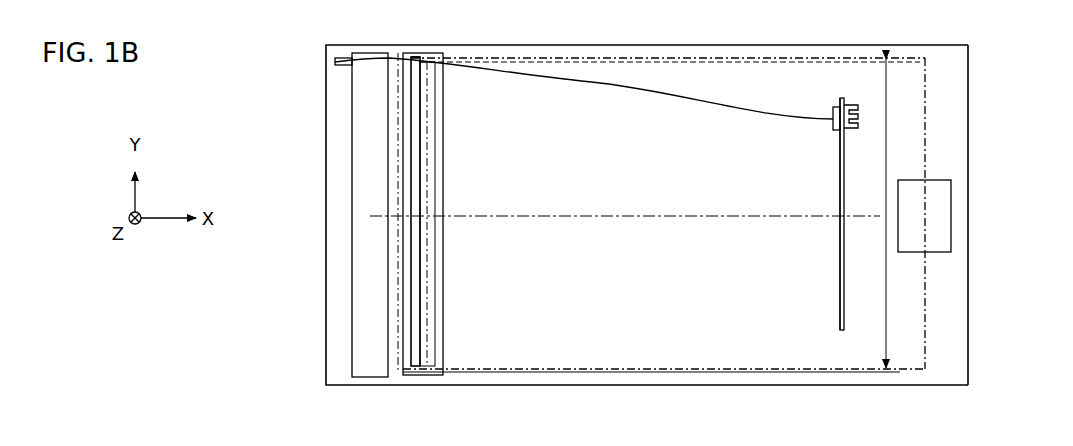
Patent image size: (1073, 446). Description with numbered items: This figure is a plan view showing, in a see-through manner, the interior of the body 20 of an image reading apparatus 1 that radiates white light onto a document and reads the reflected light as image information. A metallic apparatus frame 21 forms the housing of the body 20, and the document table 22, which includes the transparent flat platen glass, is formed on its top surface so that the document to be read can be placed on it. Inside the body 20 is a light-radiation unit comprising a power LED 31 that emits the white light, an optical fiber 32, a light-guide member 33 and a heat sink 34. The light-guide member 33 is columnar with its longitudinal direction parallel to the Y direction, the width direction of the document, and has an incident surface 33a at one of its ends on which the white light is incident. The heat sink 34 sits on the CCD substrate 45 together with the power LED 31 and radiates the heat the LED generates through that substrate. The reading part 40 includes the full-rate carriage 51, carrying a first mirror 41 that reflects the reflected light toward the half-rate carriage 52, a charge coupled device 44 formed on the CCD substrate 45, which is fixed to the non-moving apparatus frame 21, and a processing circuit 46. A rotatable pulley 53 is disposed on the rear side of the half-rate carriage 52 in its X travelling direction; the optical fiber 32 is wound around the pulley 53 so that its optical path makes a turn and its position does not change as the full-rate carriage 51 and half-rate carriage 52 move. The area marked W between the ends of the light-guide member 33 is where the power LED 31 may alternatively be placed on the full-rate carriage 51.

The image reading apparatus 1 is at (990, 87).
The body 20 is at (325, 348).
The apparatus frame 21 is at (968, 152).
The document table 22 is at (925, 328).
The power LED 31 is at (835, 105).
The optical fiber 32 is at (602, 83).
The light-guide member 33 is at (417, 165).
The incident surface 33a is at (416, 56).
The heat sink 34 is at (850, 103).
The reading part 40 is at (448, 332).
The first mirror 41 is at (425, 242).
The charge coupled device (CCD) 44 is at (839, 319).
The CCD substrate 45 is at (844, 296).
The processing circuit 46 is at (951, 210).
The full-rate carriage 51 is at (402, 195).
The half-rate carriage 52 is at (352, 115).
The pulley 53 is at (343, 65).